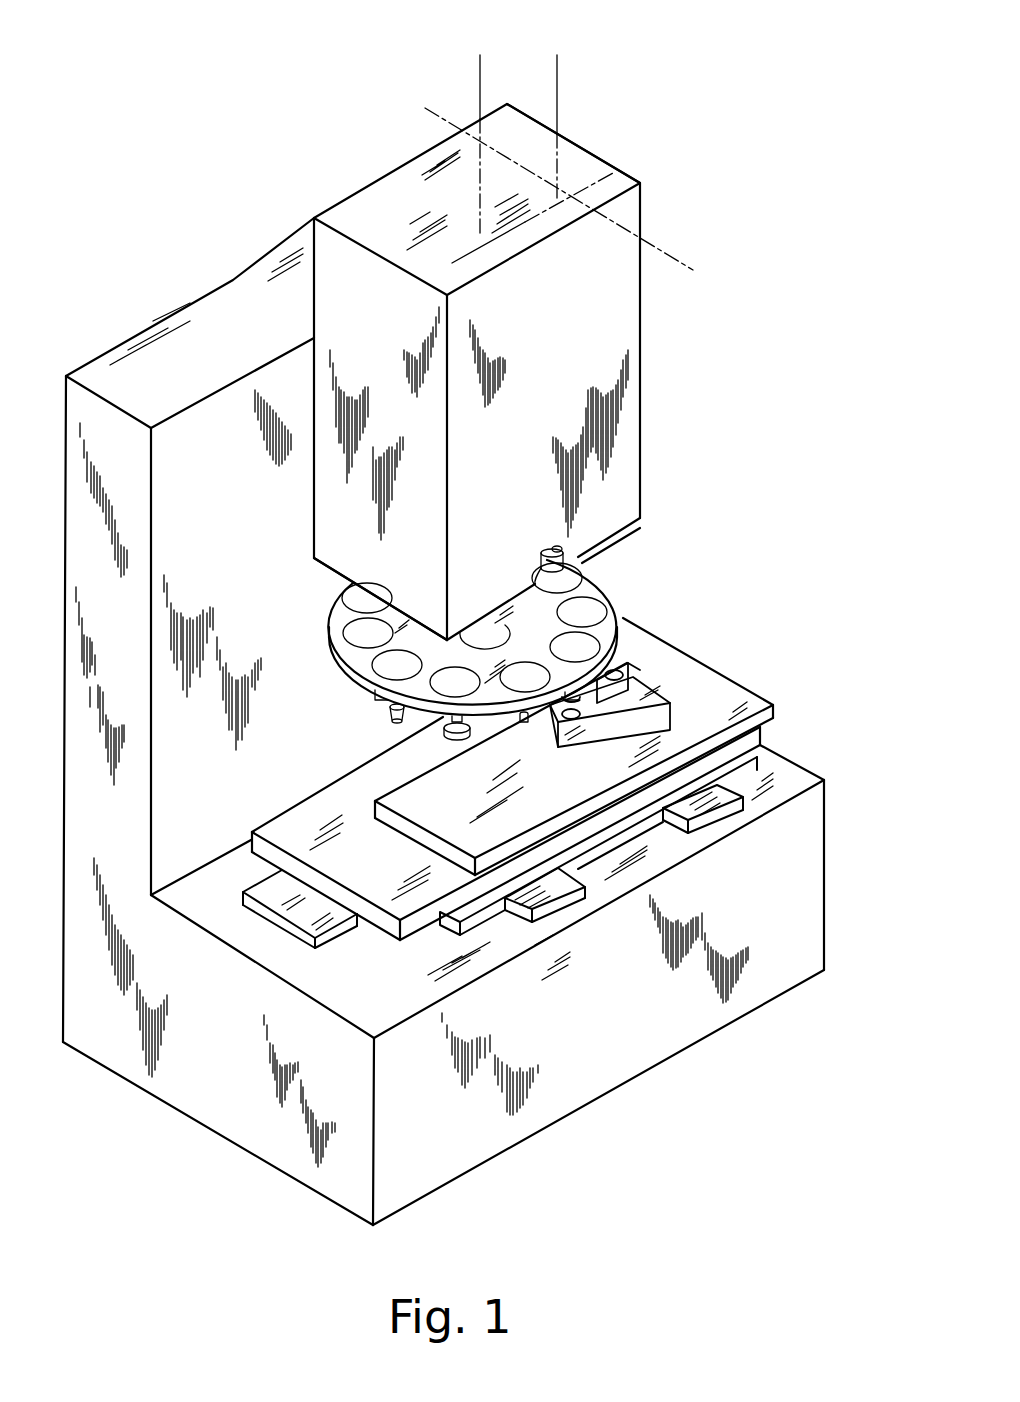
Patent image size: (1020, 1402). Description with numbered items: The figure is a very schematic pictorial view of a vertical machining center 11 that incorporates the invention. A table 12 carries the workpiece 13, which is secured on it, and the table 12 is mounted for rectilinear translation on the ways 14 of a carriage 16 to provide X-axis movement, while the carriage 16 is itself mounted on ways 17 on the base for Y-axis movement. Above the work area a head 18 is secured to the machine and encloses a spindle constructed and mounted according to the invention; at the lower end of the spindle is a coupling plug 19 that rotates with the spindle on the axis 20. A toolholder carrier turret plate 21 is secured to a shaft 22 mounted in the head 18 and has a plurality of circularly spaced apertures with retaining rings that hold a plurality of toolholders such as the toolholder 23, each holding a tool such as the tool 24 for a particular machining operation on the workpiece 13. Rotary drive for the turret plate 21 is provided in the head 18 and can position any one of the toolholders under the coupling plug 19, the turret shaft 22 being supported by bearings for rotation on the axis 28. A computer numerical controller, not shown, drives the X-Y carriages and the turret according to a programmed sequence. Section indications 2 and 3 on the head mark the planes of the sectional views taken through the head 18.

The vertical machining center 11 is at (200, 238).
The table 12 is at (300, 823).
The workpiece 13 is at (670, 697).
The ways 14 is at (269, 883).
The carriage 16 is at (720, 765).
The ways 17 is at (720, 800).
The head 18 is at (613, 323).
The coupling plug 19 is at (566, 551).
The axis 20 is at (557, 117).
The toolholder carrier turret plate 21 is at (330, 617).
The shaft 22 is at (388, 580).
The toolholder 23 is at (443, 718).
The tool 24 is at (447, 731).
The axis 28 is at (480, 65).
The section line 2- 2 is at (402, 134).
The section line 3- 3 is at (577, 166).